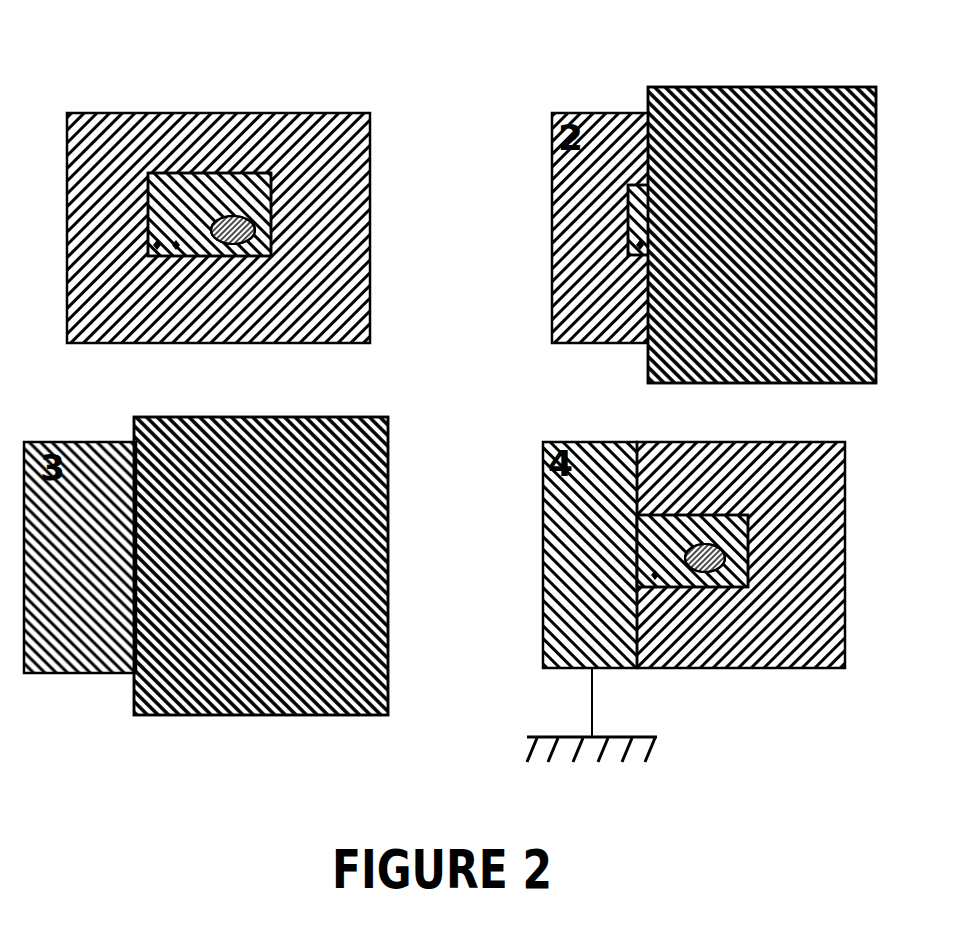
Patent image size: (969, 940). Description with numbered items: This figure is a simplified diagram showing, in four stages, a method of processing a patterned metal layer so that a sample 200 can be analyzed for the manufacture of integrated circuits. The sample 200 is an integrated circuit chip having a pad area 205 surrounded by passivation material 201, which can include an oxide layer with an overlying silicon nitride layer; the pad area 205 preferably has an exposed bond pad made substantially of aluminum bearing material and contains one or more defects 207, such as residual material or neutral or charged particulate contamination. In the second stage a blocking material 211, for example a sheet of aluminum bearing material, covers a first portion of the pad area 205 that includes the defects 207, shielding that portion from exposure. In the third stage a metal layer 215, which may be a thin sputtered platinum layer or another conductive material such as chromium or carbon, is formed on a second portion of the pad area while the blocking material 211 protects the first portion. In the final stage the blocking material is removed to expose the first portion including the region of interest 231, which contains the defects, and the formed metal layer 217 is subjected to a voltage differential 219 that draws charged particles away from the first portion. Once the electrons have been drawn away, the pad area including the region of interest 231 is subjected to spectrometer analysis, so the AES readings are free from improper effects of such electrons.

The sample 200 is at (275, 197).
The passivation material 201 is at (157, 112).
The pad area 205 is at (255, 173).
The defects 207 is at (256, 228).
The blocking material 211 is at (788, 88).
The metal layer 215 is at (72, 648).
The metal layer 217 is at (568, 630).
The voltage differential 219 is at (647, 748).
The region of interest 231 is at (784, 522).